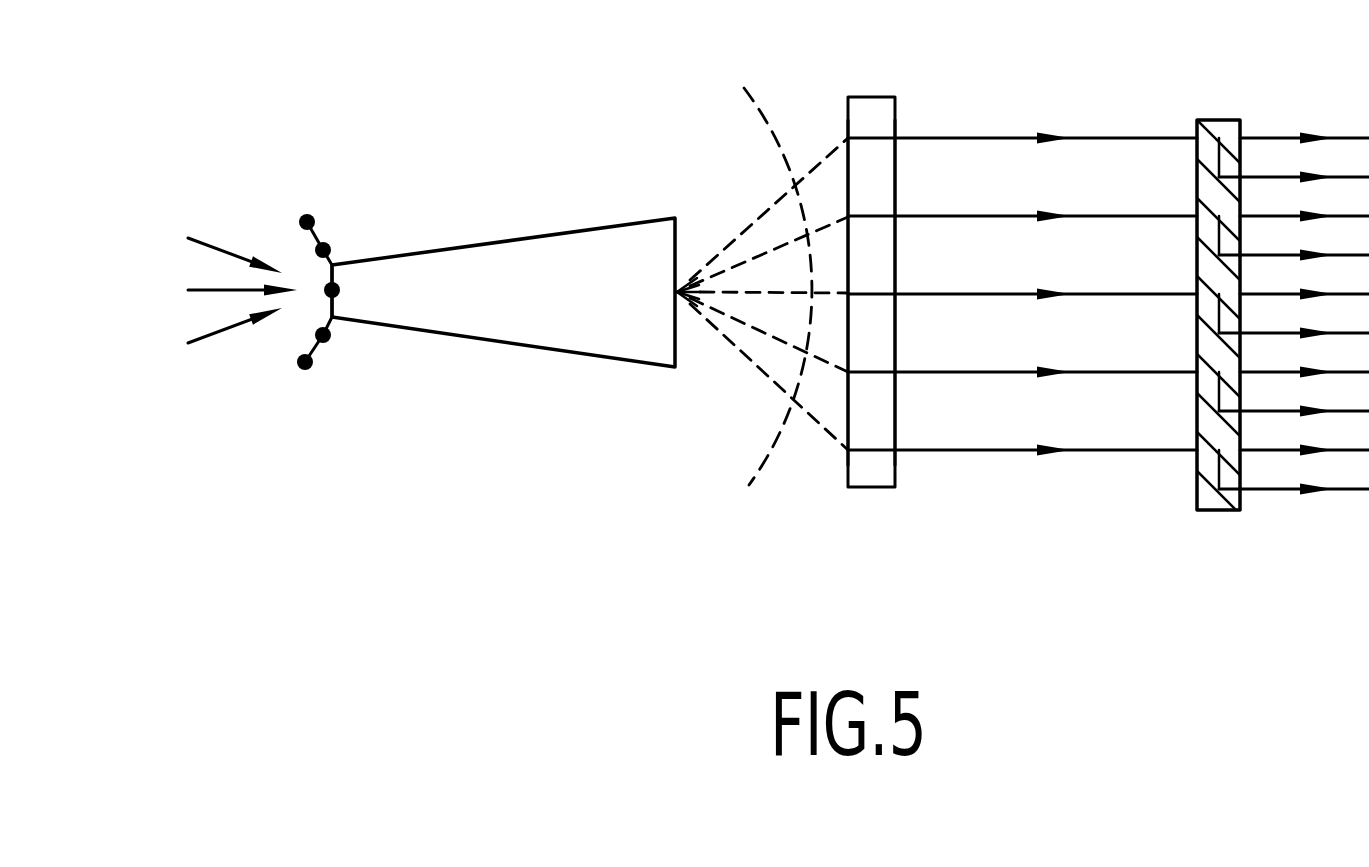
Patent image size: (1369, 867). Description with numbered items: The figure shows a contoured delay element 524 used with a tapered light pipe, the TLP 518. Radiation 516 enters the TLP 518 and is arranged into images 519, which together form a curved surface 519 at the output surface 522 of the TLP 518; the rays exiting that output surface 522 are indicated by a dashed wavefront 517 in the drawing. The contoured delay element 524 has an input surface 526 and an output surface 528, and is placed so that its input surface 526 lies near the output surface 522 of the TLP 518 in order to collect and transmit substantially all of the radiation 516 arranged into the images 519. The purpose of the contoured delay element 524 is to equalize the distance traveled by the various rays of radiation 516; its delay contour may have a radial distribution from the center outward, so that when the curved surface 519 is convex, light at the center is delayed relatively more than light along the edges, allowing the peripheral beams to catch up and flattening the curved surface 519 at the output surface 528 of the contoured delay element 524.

The radiation 516 is at (211, 290).
The spherical wavefront 517 is at (758, 260).
The TLP 518 is at (503, 315).
The images 519 is at (319, 379).
The output surface 522 is at (683, 360).
The contoured delay element 524 is at (871, 261).
The input surface 526 is at (845, 466).
The output surface 528 is at (899, 466).